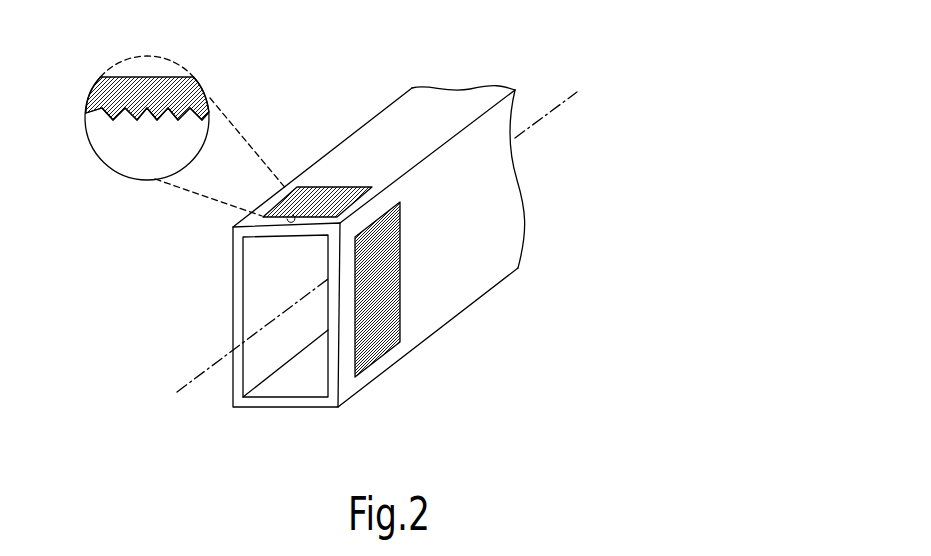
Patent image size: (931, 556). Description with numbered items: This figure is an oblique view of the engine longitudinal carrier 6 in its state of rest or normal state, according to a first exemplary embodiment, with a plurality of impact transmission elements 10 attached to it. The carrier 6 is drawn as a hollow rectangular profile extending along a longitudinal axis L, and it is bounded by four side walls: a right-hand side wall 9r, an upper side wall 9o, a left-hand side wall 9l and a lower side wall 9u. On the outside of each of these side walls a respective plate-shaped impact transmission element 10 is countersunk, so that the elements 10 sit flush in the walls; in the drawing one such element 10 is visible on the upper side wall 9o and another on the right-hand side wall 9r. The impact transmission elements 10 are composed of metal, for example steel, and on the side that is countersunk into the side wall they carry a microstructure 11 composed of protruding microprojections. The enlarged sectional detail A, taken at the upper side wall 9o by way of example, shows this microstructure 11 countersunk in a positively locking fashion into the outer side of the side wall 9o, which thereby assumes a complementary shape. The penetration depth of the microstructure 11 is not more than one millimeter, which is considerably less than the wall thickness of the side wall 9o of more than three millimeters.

The engine longitudinal carrier 6 is at (112, 138).
The upper side wall 9o is at (442, 107).
The left-hand side wall 9l is at (233, 300).
The lower side wall 9u is at (285, 407).
The right-hand side wall 9r is at (463, 290).
The impact transmission element 10 is at (135, 90).
The microstructure 11 is at (108, 122).
The detail A is at (198, 82).
The longitudinal axis L is at (370, 242).